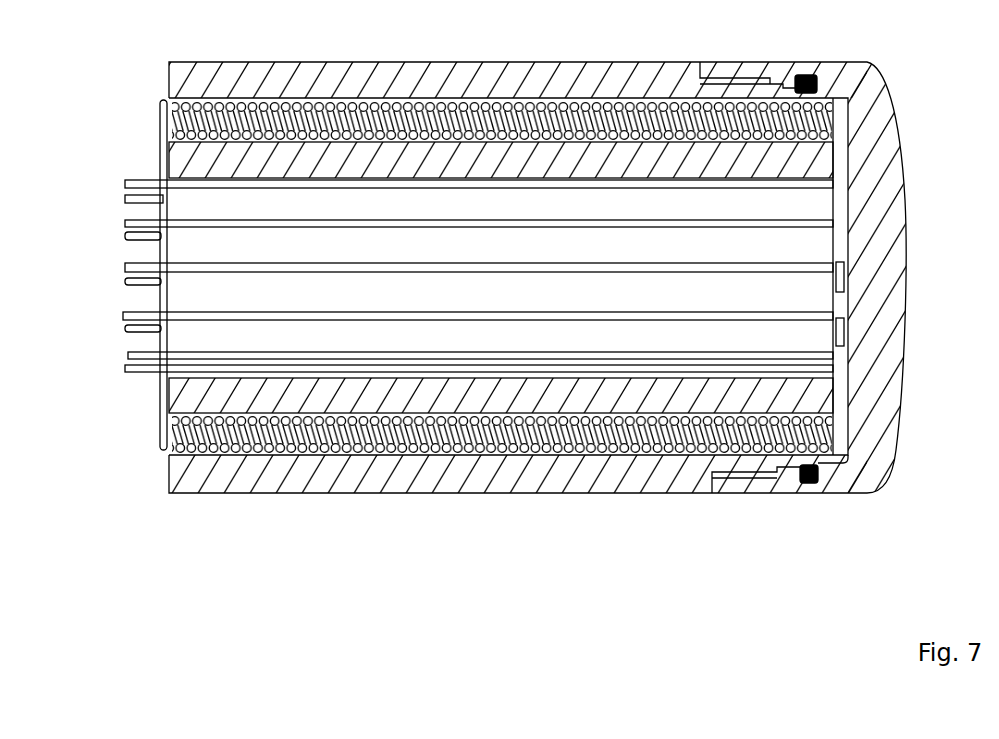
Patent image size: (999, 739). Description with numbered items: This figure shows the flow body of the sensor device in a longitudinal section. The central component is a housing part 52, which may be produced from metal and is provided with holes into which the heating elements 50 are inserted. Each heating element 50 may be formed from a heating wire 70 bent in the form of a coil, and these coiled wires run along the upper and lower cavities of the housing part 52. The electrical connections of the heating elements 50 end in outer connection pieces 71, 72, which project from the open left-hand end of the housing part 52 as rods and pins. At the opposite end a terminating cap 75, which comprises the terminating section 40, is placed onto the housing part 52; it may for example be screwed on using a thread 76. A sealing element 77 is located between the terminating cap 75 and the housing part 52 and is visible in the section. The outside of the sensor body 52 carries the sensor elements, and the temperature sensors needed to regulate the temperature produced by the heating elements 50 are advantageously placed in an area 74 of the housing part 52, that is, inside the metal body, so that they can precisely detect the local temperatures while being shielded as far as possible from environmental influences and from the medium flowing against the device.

The terminating section 40 is at (698, 57).
The heating element 50 is at (162, 447).
The housing part 52 is at (180, 483).
The heating wire 70 is at (452, 443).
The outer connection piece 71 is at (127, 283).
The outer connection piece 72 is at (125, 267).
The area of the housing part 74 is at (568, 483).
The terminating cap 75 is at (866, 483).
The thread 76 is at (736, 480).
The sealing element 77 is at (815, 484).